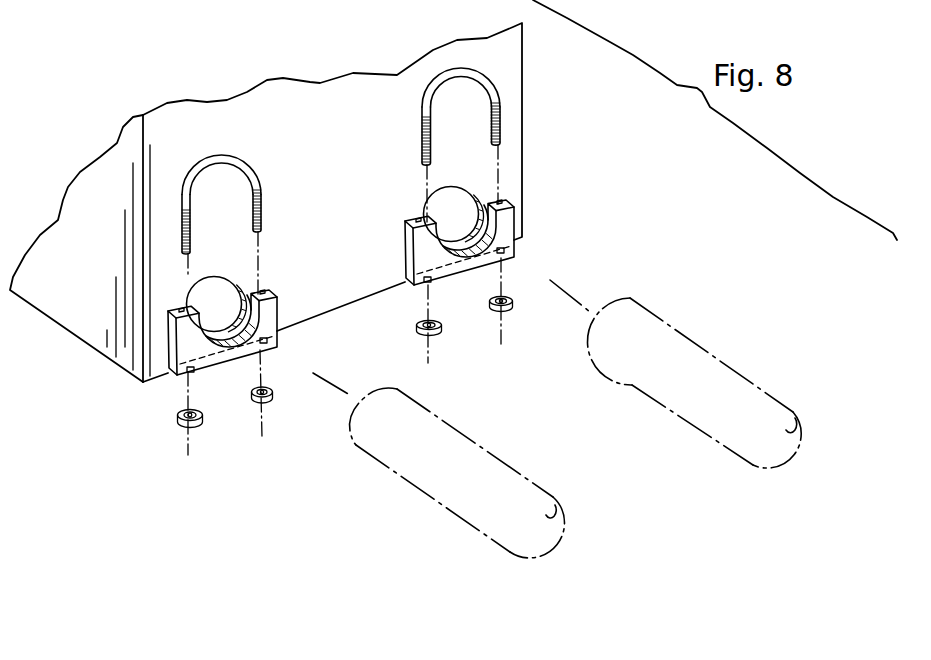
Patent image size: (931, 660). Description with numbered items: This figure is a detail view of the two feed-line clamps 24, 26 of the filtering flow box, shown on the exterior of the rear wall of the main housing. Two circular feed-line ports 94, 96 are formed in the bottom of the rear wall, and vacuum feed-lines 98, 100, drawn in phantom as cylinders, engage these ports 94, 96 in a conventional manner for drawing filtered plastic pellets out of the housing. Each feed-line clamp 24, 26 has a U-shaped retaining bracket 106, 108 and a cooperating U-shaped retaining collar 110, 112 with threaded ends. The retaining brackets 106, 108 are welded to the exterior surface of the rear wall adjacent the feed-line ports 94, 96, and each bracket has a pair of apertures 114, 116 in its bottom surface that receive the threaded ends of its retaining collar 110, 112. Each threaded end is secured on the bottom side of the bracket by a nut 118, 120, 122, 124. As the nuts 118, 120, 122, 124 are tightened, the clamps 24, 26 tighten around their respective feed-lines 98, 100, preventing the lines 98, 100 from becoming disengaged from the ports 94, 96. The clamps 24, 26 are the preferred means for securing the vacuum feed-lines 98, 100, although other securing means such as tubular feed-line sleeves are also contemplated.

The feed-line clamp 24 is at (155, 410).
The feed-line clamp 26 is at (548, 249).
The feed-line port 94 is at (257, 258).
The feed-line port 96 is at (418, 202).
The vacuum feed-line 98 is at (448, 470).
The vacuum feed-line 100 is at (673, 380).
The U-shaped retaining bracket 106 is at (258, 303).
The U-shaped retaining bracket 108 is at (425, 245).
The U-shaped retaining collar 110 is at (250, 162).
The U-shaped retaining collar 112 is at (421, 113).
The aperture 114 is at (227, 376).
The aperture 116 is at (464, 286).
The nut 118 is at (201, 430).
The nut 120 is at (273, 405).
The nut 122 is at (437, 340).
The nut 124 is at (508, 312).